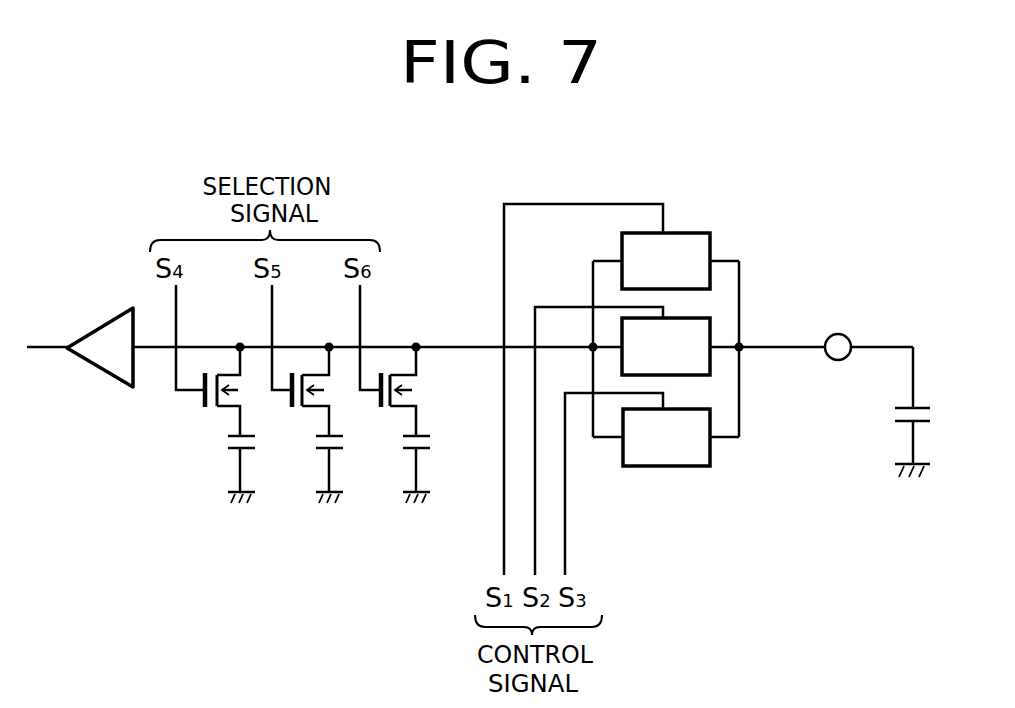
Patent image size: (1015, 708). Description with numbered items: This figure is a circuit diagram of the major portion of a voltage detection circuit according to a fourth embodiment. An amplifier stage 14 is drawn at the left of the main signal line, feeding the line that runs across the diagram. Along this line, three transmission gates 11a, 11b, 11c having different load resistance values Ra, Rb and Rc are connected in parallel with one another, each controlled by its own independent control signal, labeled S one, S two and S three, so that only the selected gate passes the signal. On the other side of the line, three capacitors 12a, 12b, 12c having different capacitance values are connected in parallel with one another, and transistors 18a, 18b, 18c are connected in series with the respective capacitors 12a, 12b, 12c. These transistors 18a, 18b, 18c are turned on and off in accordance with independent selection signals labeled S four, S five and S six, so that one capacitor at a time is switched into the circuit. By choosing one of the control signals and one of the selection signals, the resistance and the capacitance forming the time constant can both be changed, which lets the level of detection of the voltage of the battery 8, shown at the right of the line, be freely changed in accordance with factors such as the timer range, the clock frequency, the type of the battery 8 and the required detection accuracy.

The amplifier 14 is at (101, 371).
The transistor 18a is at (205, 404).
The transistor 18b is at (292, 408).
The transistor 18c is at (414, 382).
The capacitor 12a is at (254, 453).
The capacitor 12b is at (344, 453).
The capacitor 12c is at (433, 453).
The transmission gate 11a is at (700, 232).
The transmission gate 11b is at (695, 315).
The transmission gate 11c is at (710, 420).
The battery 8 is at (925, 404).